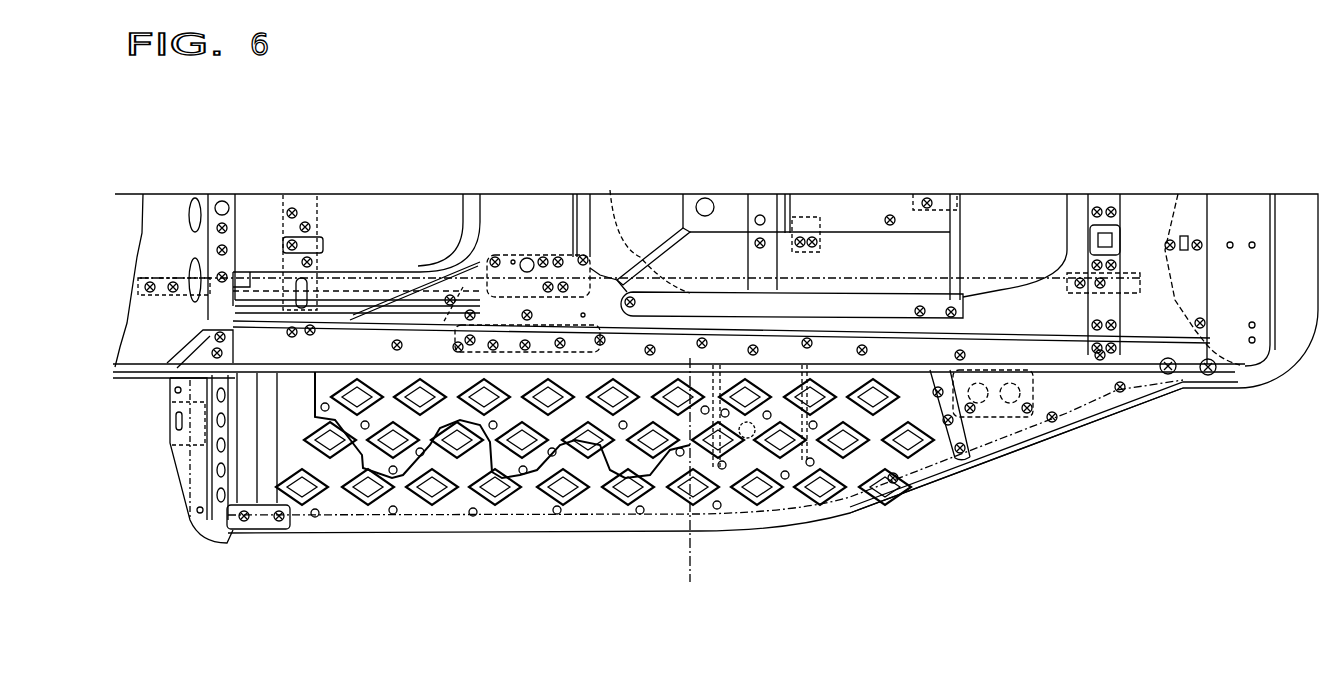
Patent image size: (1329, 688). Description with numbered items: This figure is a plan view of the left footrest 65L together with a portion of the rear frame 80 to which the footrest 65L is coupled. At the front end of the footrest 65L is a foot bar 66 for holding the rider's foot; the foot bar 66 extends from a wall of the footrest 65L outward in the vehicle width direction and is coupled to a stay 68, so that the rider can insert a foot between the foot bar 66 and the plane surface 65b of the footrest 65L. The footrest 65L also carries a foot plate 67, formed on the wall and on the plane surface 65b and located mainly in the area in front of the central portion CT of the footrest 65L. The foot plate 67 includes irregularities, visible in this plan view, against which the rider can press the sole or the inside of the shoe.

The rear frame 80 is at (1143, 208).
The stay 68 is at (180, 462).
The foot bar 66 is at (277, 505).
The foot plate 67 is at (545, 478).
The plane surface 65b is at (435, 507).
The footrest 65L is at (907, 494).
The central portion CT is at (692, 557).